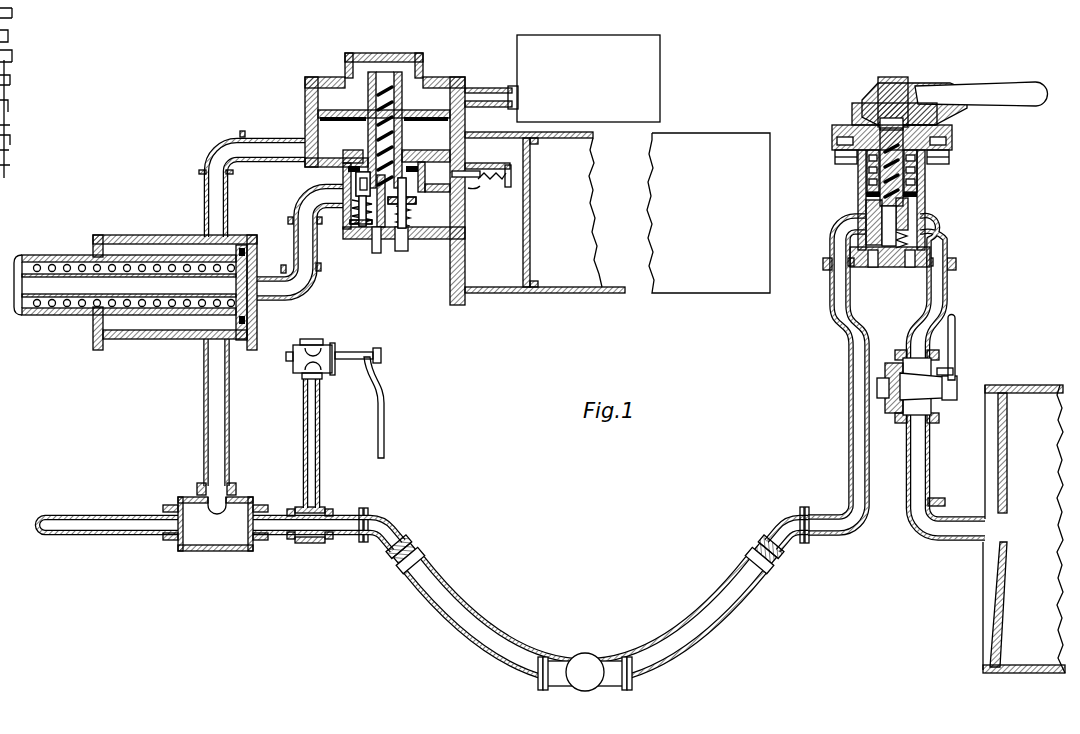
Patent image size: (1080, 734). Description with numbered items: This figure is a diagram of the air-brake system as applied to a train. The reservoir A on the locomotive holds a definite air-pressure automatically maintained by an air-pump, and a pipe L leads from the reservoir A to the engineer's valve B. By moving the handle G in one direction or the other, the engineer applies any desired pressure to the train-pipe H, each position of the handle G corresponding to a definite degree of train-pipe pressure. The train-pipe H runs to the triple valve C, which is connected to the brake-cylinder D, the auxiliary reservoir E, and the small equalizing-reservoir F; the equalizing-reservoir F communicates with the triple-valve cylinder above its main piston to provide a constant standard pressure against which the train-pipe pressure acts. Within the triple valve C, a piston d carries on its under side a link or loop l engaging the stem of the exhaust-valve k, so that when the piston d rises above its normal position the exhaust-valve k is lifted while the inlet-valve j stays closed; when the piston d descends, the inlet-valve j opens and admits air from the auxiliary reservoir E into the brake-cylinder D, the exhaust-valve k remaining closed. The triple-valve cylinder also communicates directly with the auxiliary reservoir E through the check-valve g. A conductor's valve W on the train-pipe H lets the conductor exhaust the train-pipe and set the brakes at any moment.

The reservoir A is at (1024, 529).
The engineer's valve B is at (892, 185).
The triple valve C is at (372, 179).
The brake-cylinder D is at (135, 278).
The auxiliary reservoir E is at (545, 212).
The equalizing-reservoir F is at (562, 78).
The handle G is at (1005, 48).
The train-pipe H is at (585, 599).
The pipe L is at (945, 291).
The conductor's valve W is at (377, 323).
The piston d is at (357, 172).
The check-valve g is at (474, 186).
The inlet-valve j is at (415, 199).
The exhaust-valve k is at (363, 232).
The link or loop l is at (356, 182).